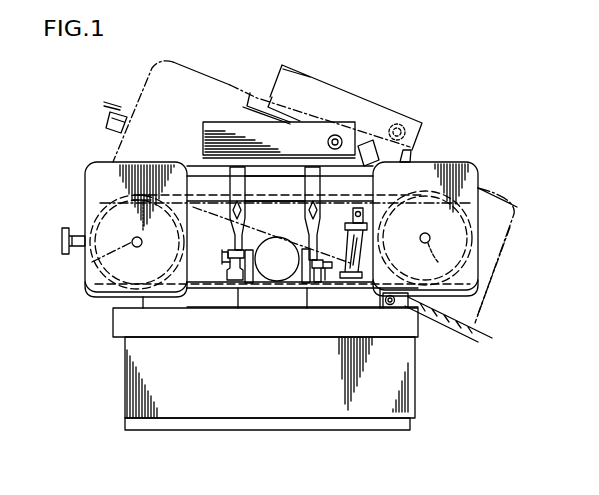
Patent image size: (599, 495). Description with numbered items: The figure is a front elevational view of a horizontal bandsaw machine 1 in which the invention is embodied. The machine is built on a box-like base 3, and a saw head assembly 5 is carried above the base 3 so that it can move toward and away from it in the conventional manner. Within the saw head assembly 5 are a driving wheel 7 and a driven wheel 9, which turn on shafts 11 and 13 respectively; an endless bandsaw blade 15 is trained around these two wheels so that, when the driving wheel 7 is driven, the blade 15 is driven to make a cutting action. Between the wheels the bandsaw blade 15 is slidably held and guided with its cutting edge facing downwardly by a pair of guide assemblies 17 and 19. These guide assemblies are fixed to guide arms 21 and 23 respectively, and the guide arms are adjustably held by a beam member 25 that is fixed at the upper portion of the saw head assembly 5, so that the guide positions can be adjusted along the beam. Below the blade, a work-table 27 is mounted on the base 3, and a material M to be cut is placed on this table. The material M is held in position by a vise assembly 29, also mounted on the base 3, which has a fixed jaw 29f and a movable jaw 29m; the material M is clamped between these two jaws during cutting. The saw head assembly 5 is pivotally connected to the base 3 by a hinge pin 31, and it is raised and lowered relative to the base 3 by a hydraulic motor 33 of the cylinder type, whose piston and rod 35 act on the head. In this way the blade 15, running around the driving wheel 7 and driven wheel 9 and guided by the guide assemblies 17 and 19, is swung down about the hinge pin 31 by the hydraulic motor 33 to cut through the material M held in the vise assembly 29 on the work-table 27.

The horizontal bandsaw machine 1 is at (95, 354).
The base 3 is at (200, 412).
The saw head assembly 5 is at (428, 152).
The driving wheel 7 is at (440, 265).
The driven wheel 9 is at (100, 208).
The shaft 11 is at (470, 277).
The shaft 13 is at (105, 252).
The bandsaw blade 15 is at (195, 283).
The guide assembly 17 is at (314, 268).
The guide assembly 19 is at (230, 288).
The guide arm 21 is at (314, 170).
The guide arm 23 is at (238, 170).
The beam member 25 is at (272, 182).
The work-table 27 is at (272, 292).
The vise assembly 29 is at (240, 258).
The movable jaw 29m is at (250, 282).
The fixed jaw 29f is at (292, 287).
The hinge pin 31 is at (493, 340).
The hydraulic motor 33 is at (347, 284).
The piston and rod 35 is at (362, 218).
The material M is at (280, 247).